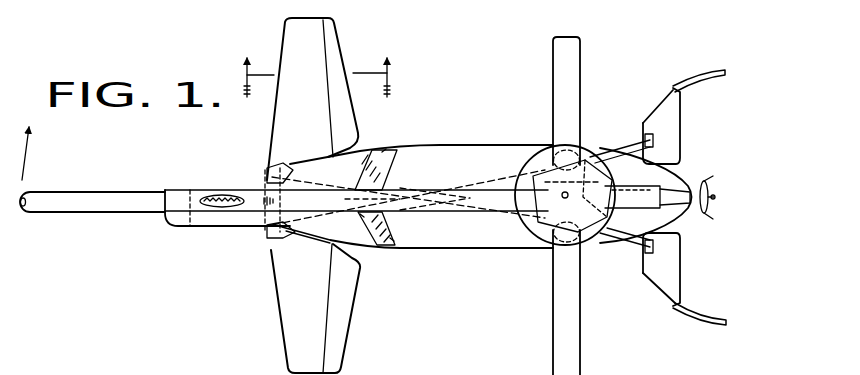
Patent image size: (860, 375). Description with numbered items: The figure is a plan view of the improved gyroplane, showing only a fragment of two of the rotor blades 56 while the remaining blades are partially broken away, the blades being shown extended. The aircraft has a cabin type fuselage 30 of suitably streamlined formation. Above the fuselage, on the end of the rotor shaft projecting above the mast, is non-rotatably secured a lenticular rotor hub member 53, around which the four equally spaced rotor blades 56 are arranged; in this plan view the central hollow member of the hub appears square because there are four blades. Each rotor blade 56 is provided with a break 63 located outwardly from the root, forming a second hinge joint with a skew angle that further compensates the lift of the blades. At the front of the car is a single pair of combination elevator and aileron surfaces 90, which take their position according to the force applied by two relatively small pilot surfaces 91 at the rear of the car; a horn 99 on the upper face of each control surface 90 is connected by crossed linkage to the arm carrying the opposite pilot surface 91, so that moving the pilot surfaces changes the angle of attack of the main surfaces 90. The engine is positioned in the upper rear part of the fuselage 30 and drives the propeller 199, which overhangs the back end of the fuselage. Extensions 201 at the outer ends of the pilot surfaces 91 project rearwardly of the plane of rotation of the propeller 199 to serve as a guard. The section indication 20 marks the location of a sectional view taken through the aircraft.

The section line 20 is at (309, 67).
The fuselage 30 is at (450, 250).
The rotor hub member 53 is at (528, 158).
The rotor blade 56 is at (584, 77).
The break 63 is at (326, 203).
The combination elevator and aileron surface 90 is at (313, 195).
The pilot surface 91 is at (681, 119).
The horn 99 is at (267, 168).
The propeller 199 is at (714, 200).
The extension 201 is at (707, 80).